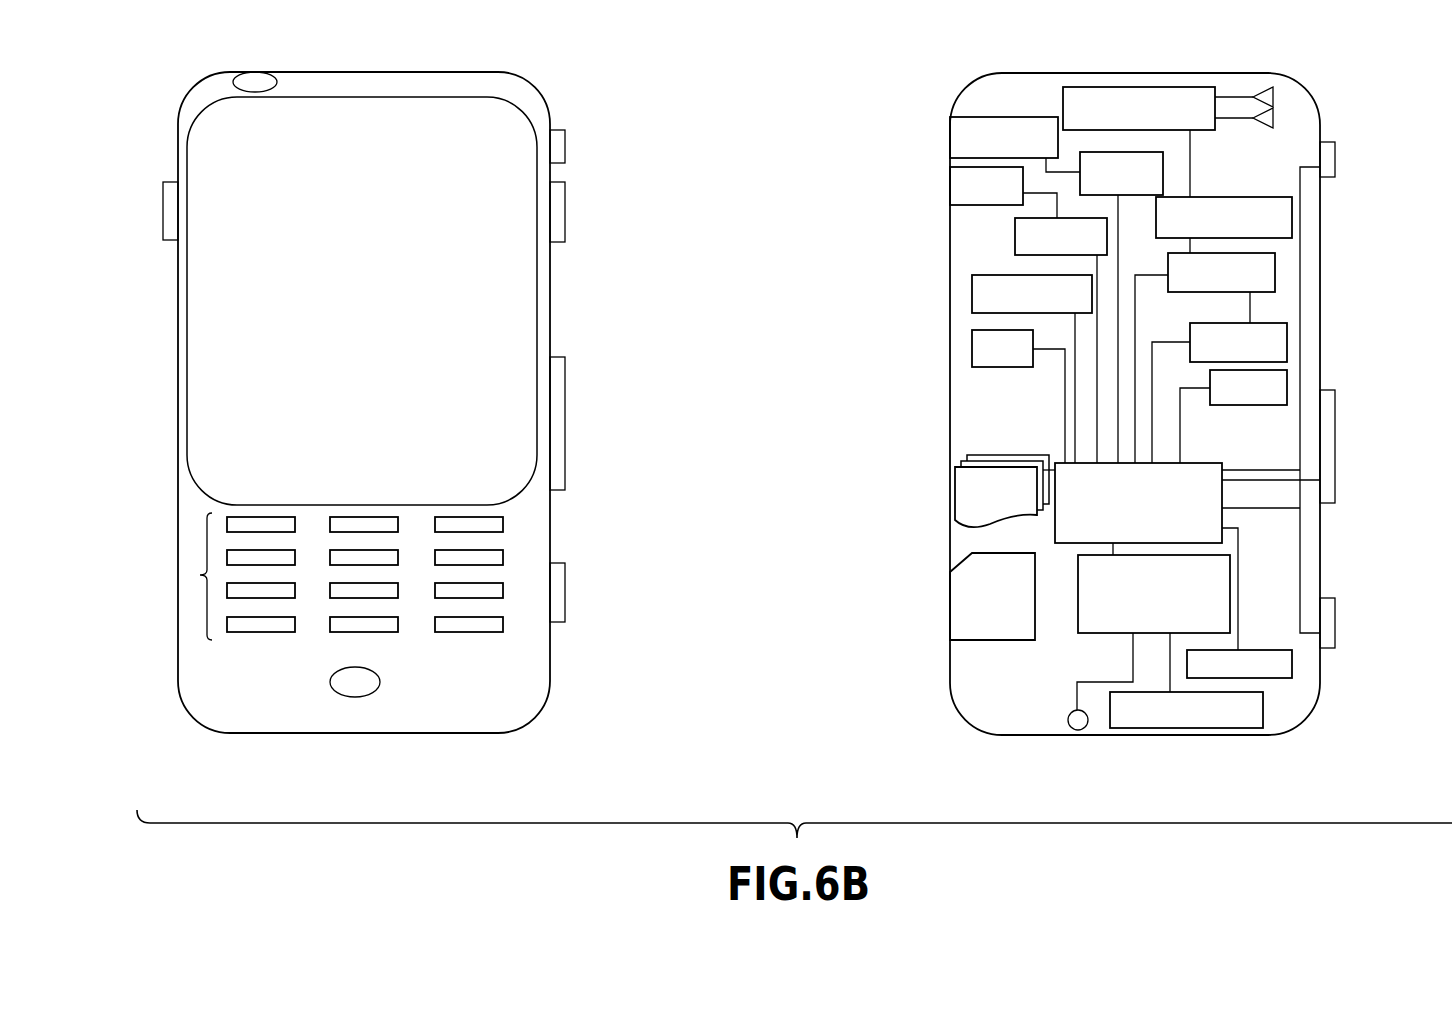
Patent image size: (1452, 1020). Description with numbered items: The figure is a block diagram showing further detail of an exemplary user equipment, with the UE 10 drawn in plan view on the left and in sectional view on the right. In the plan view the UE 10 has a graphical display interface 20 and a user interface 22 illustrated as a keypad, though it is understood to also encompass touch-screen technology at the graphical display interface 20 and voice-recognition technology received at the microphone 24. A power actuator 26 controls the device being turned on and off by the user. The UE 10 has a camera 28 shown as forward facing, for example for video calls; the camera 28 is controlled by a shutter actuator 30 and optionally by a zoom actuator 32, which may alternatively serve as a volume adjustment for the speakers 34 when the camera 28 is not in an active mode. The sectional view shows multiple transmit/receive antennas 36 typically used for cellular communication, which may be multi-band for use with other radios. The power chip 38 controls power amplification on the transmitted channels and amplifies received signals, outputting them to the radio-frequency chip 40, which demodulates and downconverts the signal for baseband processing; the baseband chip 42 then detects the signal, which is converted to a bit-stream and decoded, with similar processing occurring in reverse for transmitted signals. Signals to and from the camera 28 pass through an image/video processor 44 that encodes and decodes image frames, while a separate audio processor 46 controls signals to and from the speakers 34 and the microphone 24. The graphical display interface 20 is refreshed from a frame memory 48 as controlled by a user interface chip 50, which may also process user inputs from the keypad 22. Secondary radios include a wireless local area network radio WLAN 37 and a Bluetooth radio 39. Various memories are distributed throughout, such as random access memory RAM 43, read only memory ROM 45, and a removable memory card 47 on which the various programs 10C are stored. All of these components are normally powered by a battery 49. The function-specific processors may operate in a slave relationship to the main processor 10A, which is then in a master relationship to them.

The user equipment 10 is at (548, 779).
The main processor 10A is at (1065, 465).
The programs 10C is at (962, 505).
The graphical display interface 20 is at (215, 317).
The user interface 22 is at (200, 575).
The microphone 24 is at (358, 698).
The power actuator 26 is at (558, 148).
The camera 28 is at (262, 72).
The shutter actuator 30 is at (558, 590).
The zoom actuator 32 is at (558, 408).
The speaker 34 is at (175, 182).
The transmit/receive antennas 36 is at (1272, 95).
The wireless local area network radio 37 is at (975, 297).
The power chip 38 is at (1130, 90).
The Bluetooth radio 39 is at (978, 352).
The radio-frequency chip 40 is at (1282, 230).
The baseband chip 42 is at (1270, 285).
The random access memory 43 is at (1280, 342).
The image/video processor 44 is at (1160, 188).
The read only memory 45 is at (1280, 385).
The audio processor 46 is at (1018, 240).
The memory card 47 is at (962, 578).
The frame memory 48 is at (1187, 729).
The battery 49 is at (1285, 676).
The user interface chip 50 is at (1103, 625).